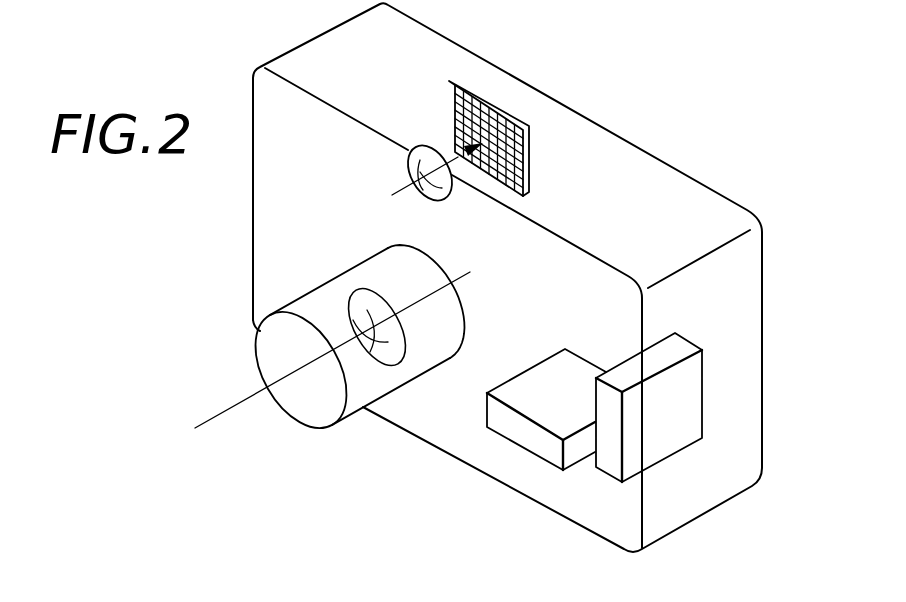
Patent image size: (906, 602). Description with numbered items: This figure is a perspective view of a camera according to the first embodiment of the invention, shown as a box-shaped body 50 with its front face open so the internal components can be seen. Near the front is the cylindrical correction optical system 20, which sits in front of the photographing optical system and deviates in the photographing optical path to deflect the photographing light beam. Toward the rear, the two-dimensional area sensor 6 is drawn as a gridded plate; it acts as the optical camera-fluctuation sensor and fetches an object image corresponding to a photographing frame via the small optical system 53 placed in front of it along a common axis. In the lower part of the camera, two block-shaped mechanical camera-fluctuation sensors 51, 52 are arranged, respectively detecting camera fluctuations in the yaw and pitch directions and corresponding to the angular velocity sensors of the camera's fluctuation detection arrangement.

The housing 50 is at (683, 181).
The correction optical system 20 is at (373, 362).
The optical system 53 is at (433, 203).
The 2-dimensional area sensor 6 is at (521, 118).
The mechanical camera-fluctuation sensor 52 is at (530, 443).
The mechanical camera-fluctuation sensor 51 is at (700, 420).